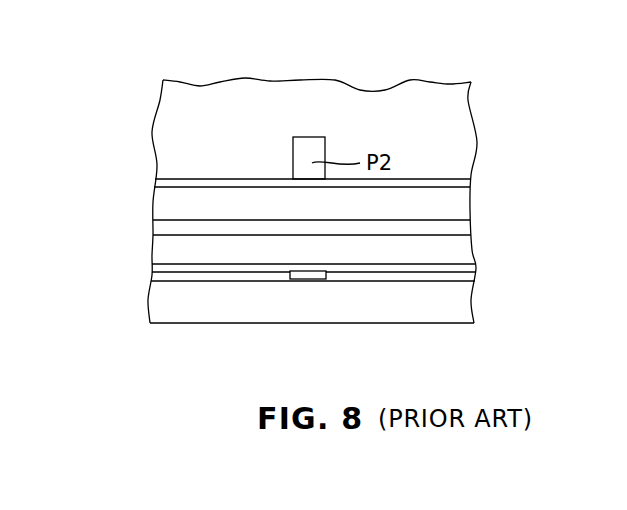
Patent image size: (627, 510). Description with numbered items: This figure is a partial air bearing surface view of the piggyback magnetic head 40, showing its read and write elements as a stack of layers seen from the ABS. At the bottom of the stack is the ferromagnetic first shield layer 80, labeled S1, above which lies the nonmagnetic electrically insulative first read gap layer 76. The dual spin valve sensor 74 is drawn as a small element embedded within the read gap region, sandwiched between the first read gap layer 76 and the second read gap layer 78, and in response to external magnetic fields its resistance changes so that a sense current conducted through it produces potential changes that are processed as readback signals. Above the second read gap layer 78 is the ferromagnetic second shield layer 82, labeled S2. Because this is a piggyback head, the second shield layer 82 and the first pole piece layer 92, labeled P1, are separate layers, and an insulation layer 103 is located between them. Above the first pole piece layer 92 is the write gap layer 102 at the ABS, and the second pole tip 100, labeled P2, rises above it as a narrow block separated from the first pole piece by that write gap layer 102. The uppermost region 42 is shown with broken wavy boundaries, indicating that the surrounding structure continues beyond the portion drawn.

The piggyback magnetic head 40 is at (492, 96).
The protective layer 42 is at (150, 112).
The second pole tip 100 is at (305, 145).
The write gap layer 102 is at (226, 178).
The first pole piece layer 92 is at (160, 204).
The insulation layer 103 is at (463, 230).
The second shield layer 82 is at (160, 253).
The second read gap layer 78 is at (432, 268).
The dual spin valve sensor 74 is at (305, 279).
The first read gap layer 76 is at (215, 283).
The first shield layer 80 is at (462, 305).